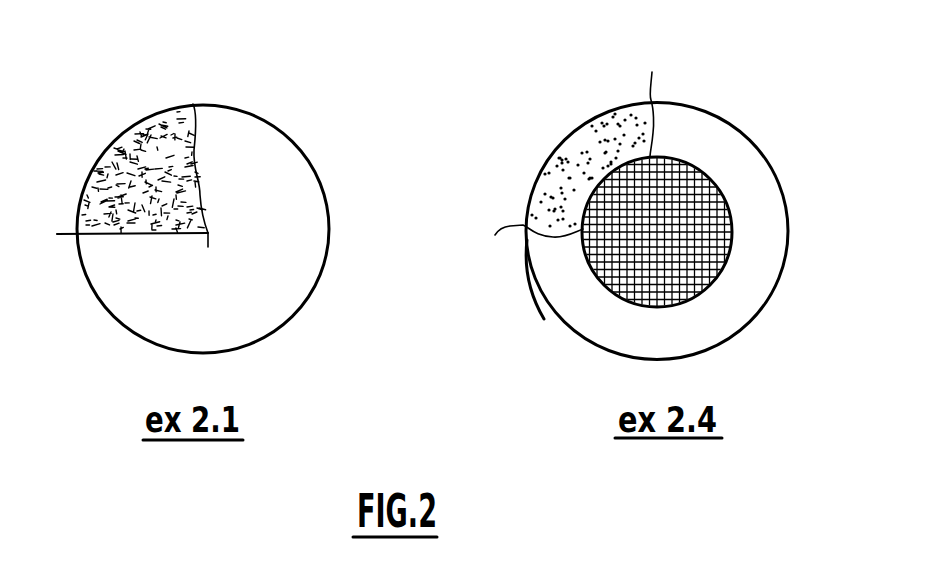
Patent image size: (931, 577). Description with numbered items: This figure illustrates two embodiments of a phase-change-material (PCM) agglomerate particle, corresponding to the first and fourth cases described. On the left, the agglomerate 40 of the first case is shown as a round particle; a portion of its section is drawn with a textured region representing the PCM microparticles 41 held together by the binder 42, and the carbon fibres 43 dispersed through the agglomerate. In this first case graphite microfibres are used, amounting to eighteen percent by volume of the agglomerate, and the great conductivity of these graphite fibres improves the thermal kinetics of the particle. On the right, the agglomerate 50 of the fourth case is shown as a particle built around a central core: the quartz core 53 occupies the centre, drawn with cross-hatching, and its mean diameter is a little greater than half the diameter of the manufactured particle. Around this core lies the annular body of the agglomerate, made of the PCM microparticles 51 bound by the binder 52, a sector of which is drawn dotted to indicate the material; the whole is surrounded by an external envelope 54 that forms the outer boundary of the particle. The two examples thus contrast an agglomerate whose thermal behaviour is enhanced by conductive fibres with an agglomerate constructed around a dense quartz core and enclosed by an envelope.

The agglomerate 40 is at (247, 158).
The PCM microparticles 41 is at (112, 158).
The binder 42 is at (80, 200).
The carbon fibres 43 is at (183, 118).
The agglomerate 50 is at (692, 138).
The PCM microparticles 51 is at (598, 138).
The binder 52 is at (563, 167).
The quartz core 53 is at (688, 195).
The external envelope 54 is at (540, 297).